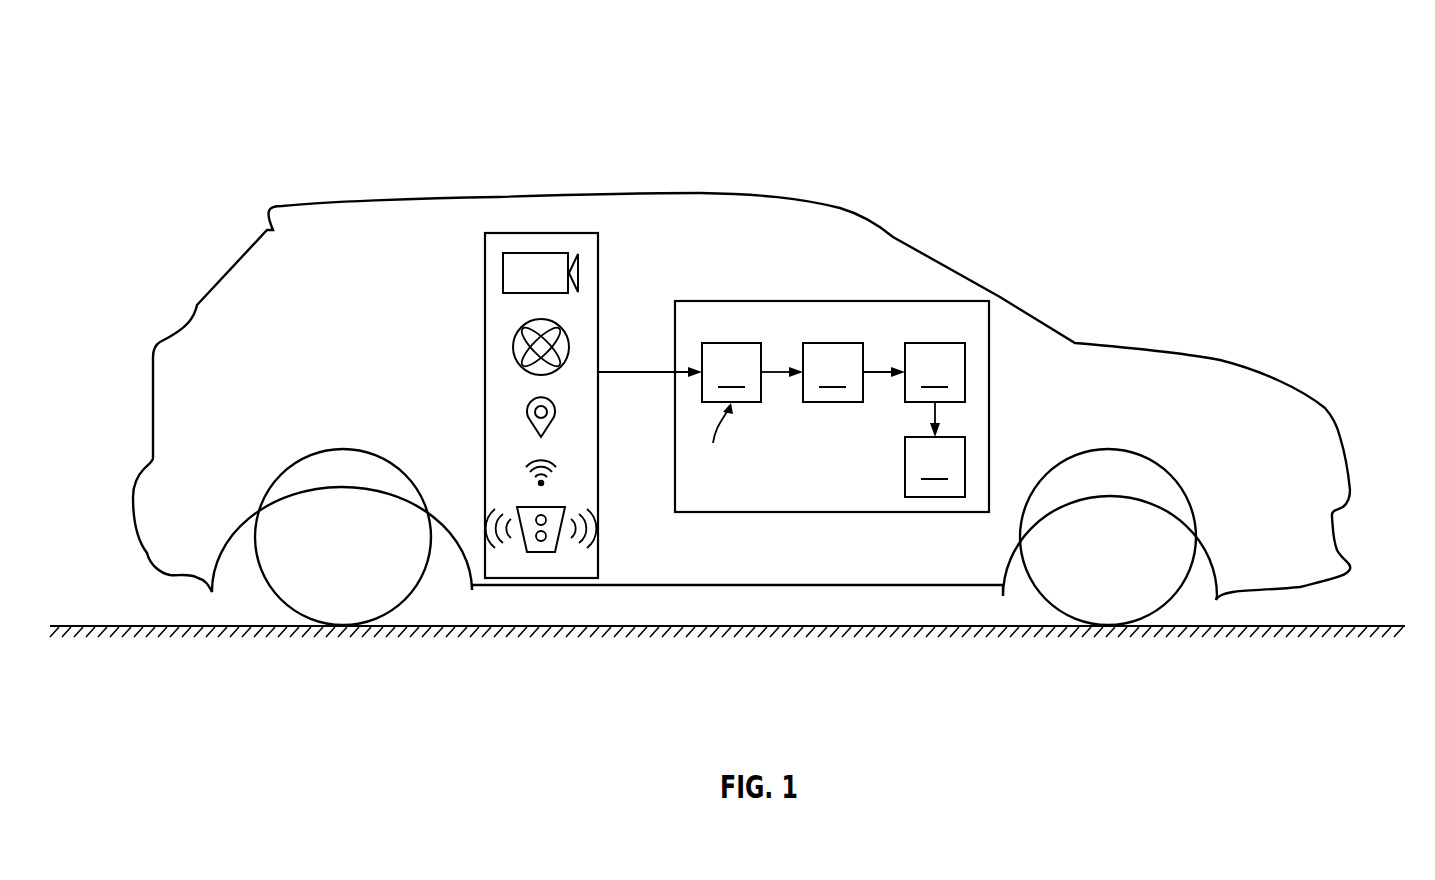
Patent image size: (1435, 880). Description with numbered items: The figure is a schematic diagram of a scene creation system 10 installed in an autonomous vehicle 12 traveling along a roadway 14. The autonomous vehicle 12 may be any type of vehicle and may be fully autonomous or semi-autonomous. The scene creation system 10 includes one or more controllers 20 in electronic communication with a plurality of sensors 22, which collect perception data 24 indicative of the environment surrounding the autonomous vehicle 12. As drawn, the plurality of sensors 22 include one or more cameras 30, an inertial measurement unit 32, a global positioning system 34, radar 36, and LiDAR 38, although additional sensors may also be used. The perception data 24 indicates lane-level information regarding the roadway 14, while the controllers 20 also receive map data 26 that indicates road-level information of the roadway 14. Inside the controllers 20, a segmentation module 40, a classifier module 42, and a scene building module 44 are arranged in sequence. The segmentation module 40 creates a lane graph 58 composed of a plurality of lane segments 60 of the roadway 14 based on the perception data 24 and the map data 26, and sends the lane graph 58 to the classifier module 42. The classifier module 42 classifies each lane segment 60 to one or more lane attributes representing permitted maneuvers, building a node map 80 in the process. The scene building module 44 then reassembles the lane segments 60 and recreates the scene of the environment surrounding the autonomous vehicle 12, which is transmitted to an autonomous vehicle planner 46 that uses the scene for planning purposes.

The scene creation system 10 is at (741, 322).
The autonomous vehicle 12 is at (724, 196).
The roadway 14 is at (1388, 625).
The controller 20 is at (990, 420).
The plurality of sensors 22 is at (548, 233).
The perception data 24 is at (600, 372).
The map data 26 is at (716, 439).
The camera 30 is at (503, 280).
The inertial measurement unit 32 is at (514, 345).
The global positioning system 34 is at (527, 415).
The radar 36 is at (528, 463).
The LiDAR 38 is at (538, 553).
The segmentation module 40 is at (731, 372).
The classifier module 42 is at (833, 372).
The scene building module 44 is at (935, 372).
The autonomous vehicle planner 46 is at (935, 467).
The lane graph 58 is at (777, 368).
The lane segment 60 is at (879, 368).
The node map 80 is at (895, 338).